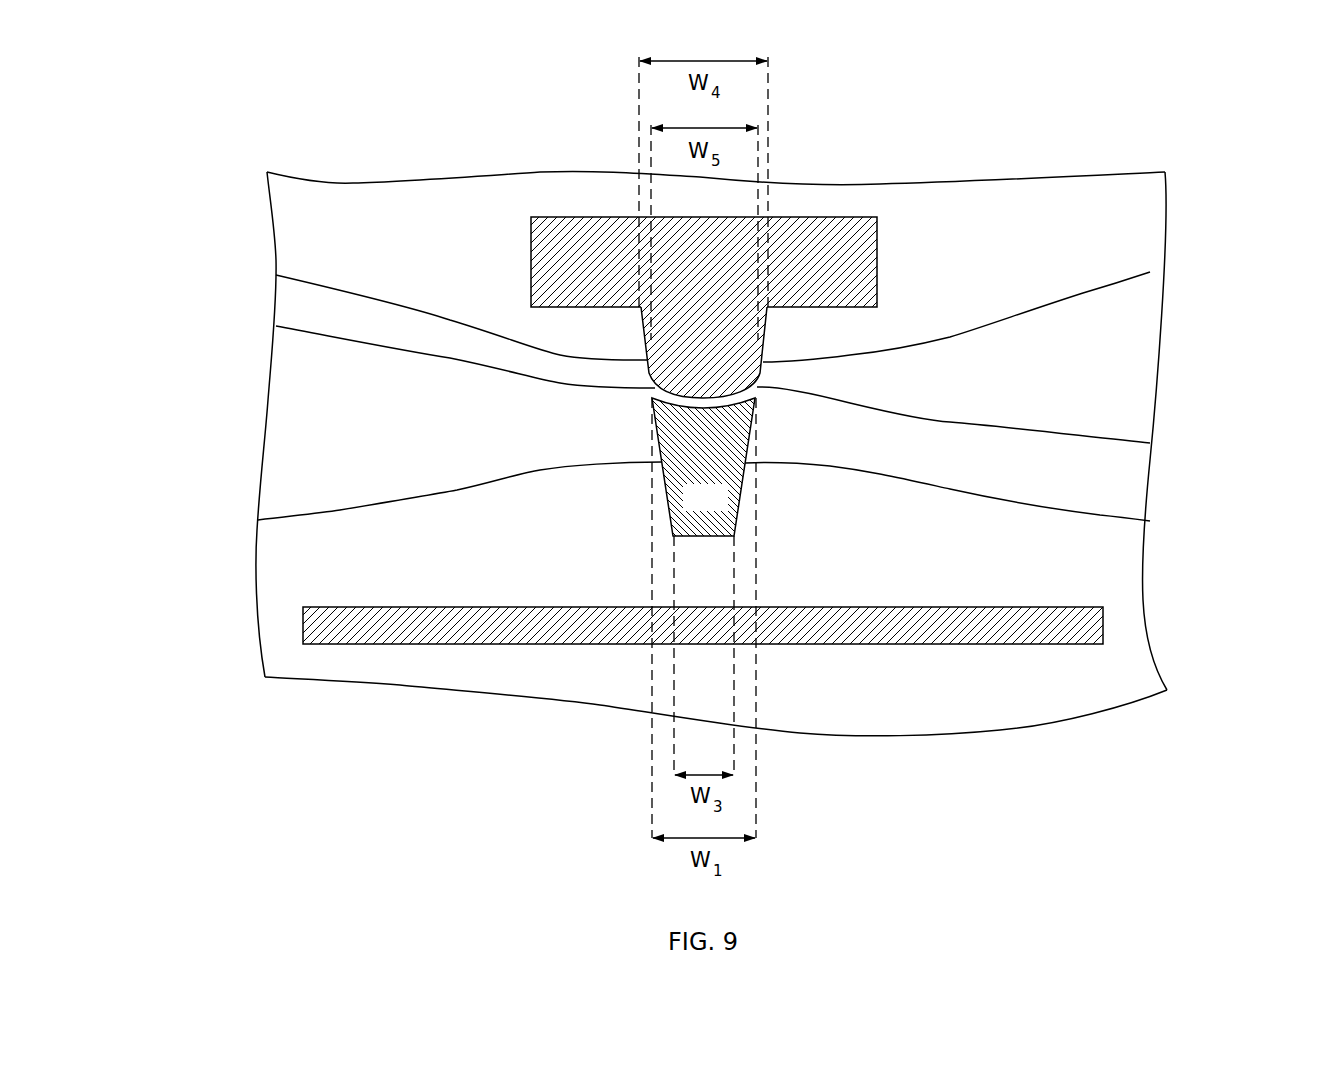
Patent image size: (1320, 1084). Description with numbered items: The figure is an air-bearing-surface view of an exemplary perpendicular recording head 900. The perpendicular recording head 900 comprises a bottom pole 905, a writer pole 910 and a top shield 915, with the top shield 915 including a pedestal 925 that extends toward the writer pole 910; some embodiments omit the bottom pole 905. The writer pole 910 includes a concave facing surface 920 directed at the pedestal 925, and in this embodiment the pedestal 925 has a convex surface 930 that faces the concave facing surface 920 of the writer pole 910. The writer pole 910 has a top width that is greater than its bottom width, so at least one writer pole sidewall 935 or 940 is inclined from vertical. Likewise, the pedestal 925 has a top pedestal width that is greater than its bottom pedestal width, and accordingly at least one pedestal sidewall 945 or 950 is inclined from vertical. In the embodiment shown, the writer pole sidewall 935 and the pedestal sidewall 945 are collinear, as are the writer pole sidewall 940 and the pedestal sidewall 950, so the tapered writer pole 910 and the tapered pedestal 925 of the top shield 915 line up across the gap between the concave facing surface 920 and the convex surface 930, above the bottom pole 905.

The perpendicular recording head 900 is at (1095, 175).
The bottom pole 905 is at (303, 625).
The writer pole 910 is at (703, 467).
The top shield 915 is at (615, 217).
The concave facing surface 920 is at (1150, 443).
The pedestal 925 is at (765, 329).
The convex surface 930 is at (276, 326).
The writer pole sidewall 935 is at (258, 520).
The writer pole sidewall 940 is at (1150, 521).
The pedestal sidewall 945 is at (276, 275).
The pedestal sidewall 950 is at (1150, 272).